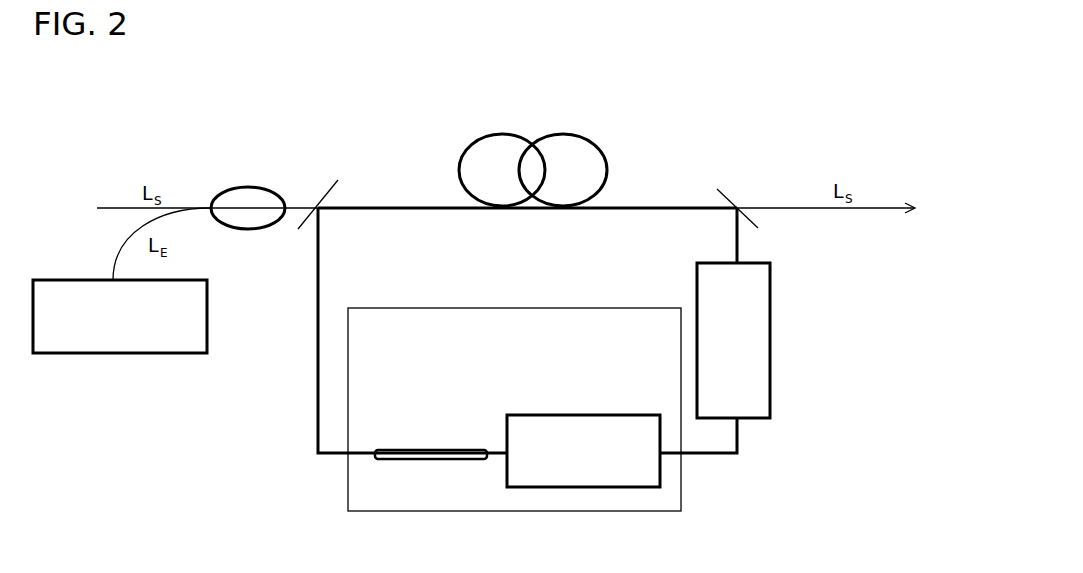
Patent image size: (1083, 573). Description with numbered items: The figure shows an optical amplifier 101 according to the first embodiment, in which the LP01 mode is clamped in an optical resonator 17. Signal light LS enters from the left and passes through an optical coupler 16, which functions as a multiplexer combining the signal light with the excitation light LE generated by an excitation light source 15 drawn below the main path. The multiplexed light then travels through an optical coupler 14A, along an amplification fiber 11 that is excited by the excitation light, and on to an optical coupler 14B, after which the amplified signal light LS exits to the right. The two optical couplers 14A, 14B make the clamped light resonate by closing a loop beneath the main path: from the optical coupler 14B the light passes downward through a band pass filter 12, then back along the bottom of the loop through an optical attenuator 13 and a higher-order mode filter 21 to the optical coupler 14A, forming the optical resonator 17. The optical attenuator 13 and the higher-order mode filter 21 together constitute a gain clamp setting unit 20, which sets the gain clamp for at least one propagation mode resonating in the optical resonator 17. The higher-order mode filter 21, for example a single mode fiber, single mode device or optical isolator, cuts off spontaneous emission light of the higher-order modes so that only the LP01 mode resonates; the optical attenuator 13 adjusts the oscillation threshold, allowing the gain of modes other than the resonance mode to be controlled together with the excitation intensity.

The optical amplifier 101 is at (728, 64).
The amplification fiber 11 is at (604, 155).
The band pass filter 12 is at (773, 307).
The optical attenuator 13 is at (586, 413).
The optical coupler 14A is at (326, 186).
The optical coupler 14B is at (724, 192).
The excitation light source 15 is at (84, 280).
The optical coupler 16 is at (248, 187).
The optical resonator 17 is at (751, 474).
The gain clamp setting unit 20 is at (528, 308).
The higher-order mode filter 21 is at (418, 449).